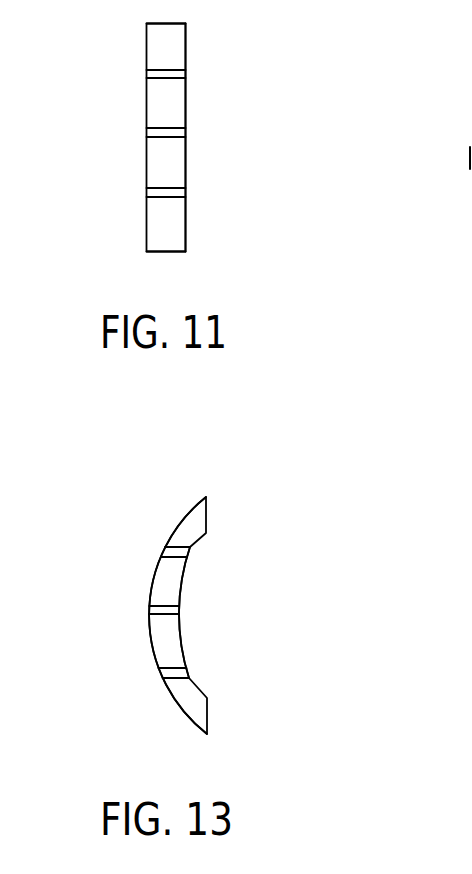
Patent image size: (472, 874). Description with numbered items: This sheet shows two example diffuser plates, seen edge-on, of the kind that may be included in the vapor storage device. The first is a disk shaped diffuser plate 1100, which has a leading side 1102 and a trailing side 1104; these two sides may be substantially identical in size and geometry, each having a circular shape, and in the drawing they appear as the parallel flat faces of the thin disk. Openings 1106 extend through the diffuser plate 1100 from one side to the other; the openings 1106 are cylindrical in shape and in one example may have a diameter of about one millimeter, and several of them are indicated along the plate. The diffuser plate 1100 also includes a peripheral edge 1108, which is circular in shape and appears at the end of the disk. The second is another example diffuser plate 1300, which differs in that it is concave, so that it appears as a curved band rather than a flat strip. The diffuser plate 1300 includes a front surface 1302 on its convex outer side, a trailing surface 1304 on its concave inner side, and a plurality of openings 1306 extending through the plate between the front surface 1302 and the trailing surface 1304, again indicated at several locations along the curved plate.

In FIG. 11, the diffuser plate 1100 is at (98, 151).
In FIG. 11, the leading side 1102 is at (147, 42).
In FIG. 11, the trailing side 1104 is at (186, 43).
In FIG. 11, the openings 1106 is at (150, 81).
In FIG. 11, the peripheral edge 1108 is at (168, 252).
In FIG. 13, the diffuser plate 1300 is at (112, 629).
In FIG. 13, the front surface 1302 is at (150, 601).
In FIG. 13, the trailing surface 1304 is at (182, 649).
In FIG. 13, the openings 1306 is at (188, 547).